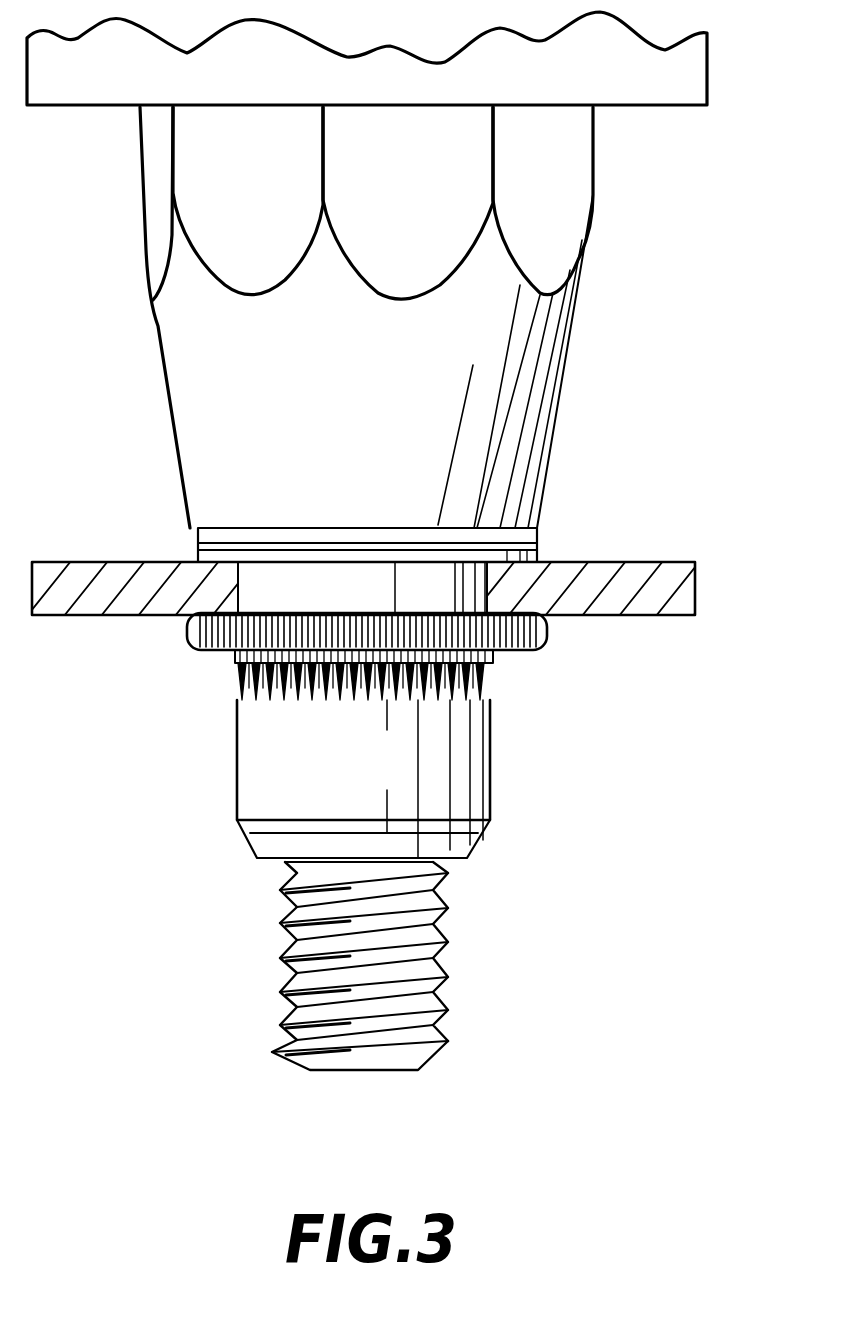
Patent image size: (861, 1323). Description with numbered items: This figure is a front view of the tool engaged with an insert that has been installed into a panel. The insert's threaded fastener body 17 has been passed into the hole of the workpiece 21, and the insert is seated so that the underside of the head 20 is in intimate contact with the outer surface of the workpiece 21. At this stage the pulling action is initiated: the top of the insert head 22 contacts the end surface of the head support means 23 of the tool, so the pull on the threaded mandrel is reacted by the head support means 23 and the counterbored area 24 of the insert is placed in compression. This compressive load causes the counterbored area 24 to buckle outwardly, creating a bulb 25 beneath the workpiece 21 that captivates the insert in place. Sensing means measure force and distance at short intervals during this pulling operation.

The fastener body 17 is at (490, 757).
The head 20 is at (475, 597).
The workpiece 21 is at (657, 560).
The insert head 22 is at (198, 545).
The head support means 23 is at (523, 533).
The counterbored area 24 is at (520, 647).
The bulb 25 is at (185, 631).